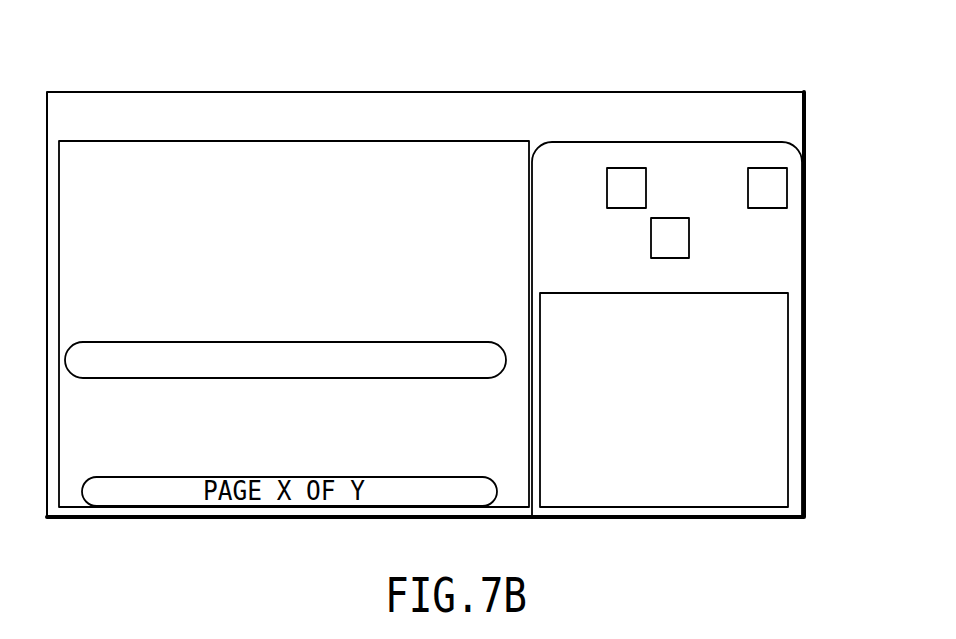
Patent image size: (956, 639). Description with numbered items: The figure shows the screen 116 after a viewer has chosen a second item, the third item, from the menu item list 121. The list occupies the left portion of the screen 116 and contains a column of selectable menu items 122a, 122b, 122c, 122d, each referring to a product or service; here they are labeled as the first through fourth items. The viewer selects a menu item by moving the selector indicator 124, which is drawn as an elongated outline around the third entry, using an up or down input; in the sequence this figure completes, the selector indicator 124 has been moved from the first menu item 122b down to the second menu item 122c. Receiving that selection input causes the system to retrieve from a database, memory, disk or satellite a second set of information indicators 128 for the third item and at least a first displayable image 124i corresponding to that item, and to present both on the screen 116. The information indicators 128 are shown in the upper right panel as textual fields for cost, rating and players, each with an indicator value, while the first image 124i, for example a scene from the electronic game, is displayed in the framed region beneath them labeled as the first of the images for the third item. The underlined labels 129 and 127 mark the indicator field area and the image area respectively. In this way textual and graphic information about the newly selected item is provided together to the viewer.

The screen 116 is at (620, 92).
The menu item list 121 is at (181, 152).
The menu item 122a is at (176, 186).
The first menu item 122b is at (172, 273).
The second menu item 122c is at (176, 363).
The menu item 122d is at (172, 449).
The selector indicator 124 is at (423, 343).
The first displayable image 124i is at (712, 400).
The item image region 127 is at (617, 490).
The second set of information indicators 128 is at (702, 329).
The item attribute fields 129 is at (774, 272).